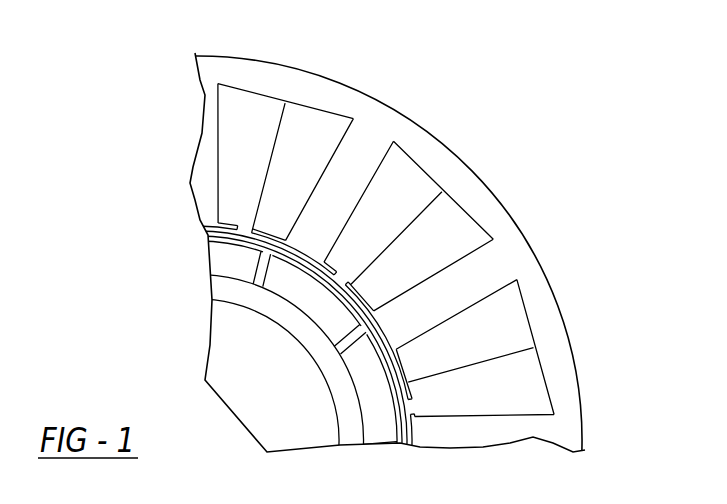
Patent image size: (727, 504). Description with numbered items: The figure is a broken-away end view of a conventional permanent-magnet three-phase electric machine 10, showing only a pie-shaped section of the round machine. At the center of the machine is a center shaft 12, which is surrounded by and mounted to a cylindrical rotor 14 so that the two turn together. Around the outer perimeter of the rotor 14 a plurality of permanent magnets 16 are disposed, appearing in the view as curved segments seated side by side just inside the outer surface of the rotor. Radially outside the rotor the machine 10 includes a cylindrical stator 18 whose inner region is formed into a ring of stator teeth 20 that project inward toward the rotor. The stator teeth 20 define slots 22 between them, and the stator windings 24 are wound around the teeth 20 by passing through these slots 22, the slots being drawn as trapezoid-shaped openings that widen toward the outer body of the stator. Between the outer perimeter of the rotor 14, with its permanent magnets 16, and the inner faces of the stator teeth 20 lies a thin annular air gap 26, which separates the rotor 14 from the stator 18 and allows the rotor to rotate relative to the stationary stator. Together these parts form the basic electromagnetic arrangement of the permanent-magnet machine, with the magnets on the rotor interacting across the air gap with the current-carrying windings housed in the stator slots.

The electric machine 10 is at (553, 84).
The center shaft 12 is at (240, 353).
The rotor 14 is at (352, 418).
The permanent magnets 16 is at (229, 259).
The stator 18 is at (565, 365).
The stator teeth 20 is at (338, 177).
The slots 22 is at (268, 93).
The stator windings 24 is at (510, 327).
The air gap 26 is at (208, 232).